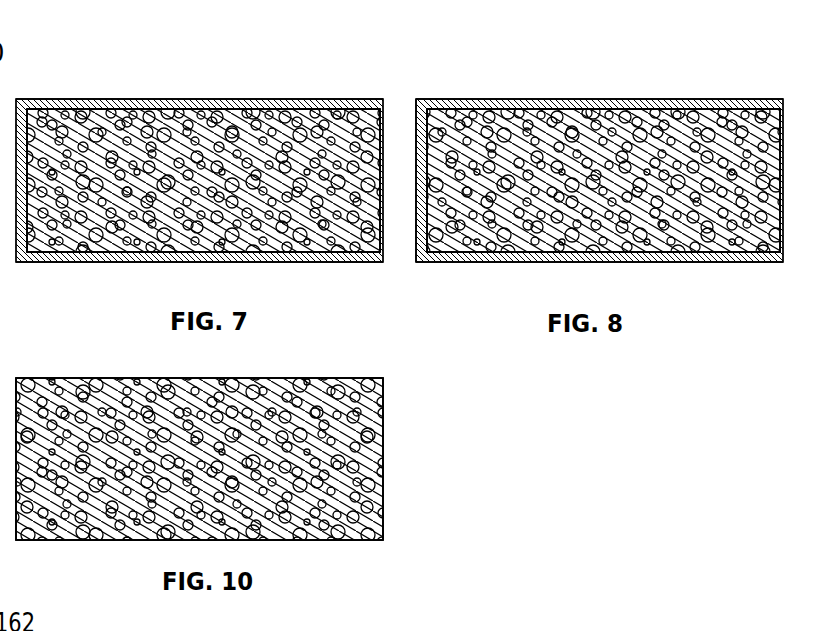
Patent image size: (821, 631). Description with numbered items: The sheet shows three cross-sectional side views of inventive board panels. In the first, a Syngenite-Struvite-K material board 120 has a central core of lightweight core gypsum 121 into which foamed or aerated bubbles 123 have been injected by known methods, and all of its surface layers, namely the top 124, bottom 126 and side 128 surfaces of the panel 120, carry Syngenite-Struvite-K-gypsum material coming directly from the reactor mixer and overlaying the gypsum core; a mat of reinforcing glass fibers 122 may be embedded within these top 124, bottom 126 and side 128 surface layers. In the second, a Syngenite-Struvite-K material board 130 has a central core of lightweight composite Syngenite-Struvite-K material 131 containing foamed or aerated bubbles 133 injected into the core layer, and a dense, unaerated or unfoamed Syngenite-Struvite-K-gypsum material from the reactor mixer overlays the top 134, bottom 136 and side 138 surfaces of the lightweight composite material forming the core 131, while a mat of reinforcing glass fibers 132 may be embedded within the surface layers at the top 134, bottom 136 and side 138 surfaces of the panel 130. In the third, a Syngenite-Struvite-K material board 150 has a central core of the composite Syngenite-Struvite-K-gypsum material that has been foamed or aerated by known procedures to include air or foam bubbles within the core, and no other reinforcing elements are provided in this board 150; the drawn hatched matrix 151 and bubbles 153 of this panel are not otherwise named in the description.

In FIG. 7, the Syngenite-Struvite-K material board 120 is at (194, 150).
In FIG. 7, the lightweight core gypsum 121 is at (203, 166).
In FIG. 7, the mat of reinforcing glass fibers 122 is at (115, 108).
In FIG. 7, the foamed or aerated bubbles 123 is at (290, 212).
In FIG. 7, the top surface 124 is at (262, 100).
In FIG. 7, the bottom surface 126 is at (125, 262).
In FIG. 7, the side surface 128 is at (17, 120).
In FIG. 8, the Syngenite-Struvite-K material board 130 is at (591, 183).
In FIG. 8, the lightweight composite Syngenite-Struvite-K material core 131 is at (603, 147).
In FIG. 8, the mat of reinforcing glass fibers 132 is at (488, 108).
In FIG. 8, the foamed or aerated bubbles 133 is at (725, 163).
In FIG. 8, the top surface 134 is at (578, 98).
In FIG. 8, the bottom surface 136 is at (485, 262).
In FIG. 8, the side surface 138 is at (416, 197).
In FIG. 10, the Syngenite-Struvite-K material board 150 is at (249, 476).
In FIG. 10, the matrix material 151 is at (280, 432).
In FIG. 10, the particles 153 is at (287, 518).